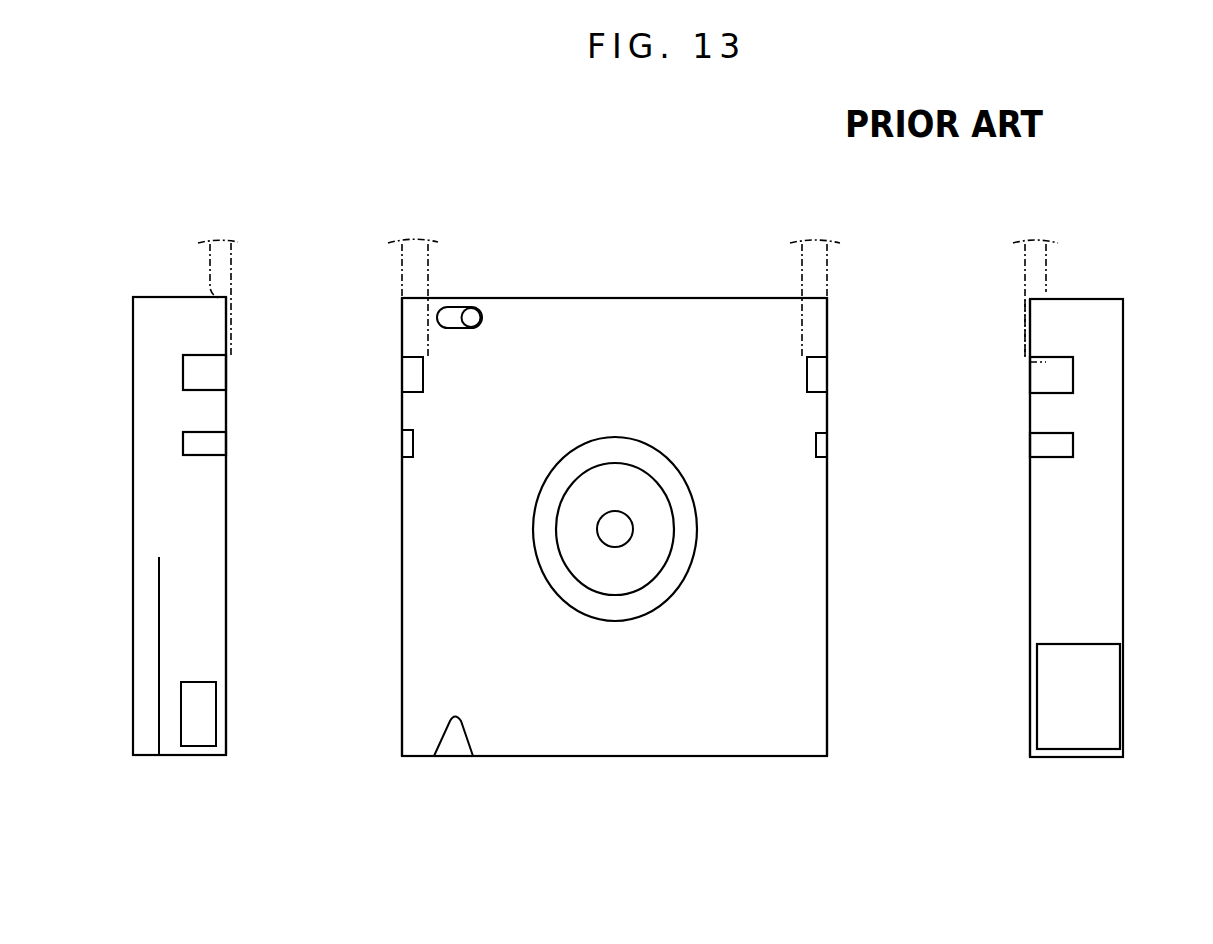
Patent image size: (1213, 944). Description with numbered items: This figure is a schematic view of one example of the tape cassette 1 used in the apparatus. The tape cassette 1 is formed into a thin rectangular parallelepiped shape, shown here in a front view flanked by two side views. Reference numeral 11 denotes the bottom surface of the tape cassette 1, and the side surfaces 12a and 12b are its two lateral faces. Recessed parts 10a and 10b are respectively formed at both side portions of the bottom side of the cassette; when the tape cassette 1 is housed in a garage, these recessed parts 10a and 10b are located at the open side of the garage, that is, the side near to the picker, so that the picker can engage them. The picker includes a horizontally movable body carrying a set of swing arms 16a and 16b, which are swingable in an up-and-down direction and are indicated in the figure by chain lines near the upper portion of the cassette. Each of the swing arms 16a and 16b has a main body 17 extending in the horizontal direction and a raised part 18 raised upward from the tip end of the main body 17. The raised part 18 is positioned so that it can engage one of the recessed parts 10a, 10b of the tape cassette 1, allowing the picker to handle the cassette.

The tape cassette 1 is at (170, 658).
The recessed part 10a is at (210, 380).
The recessed part 10b is at (820, 373).
The bottom surface 11 is at (703, 707).
The side surface 12a is at (200, 575).
The side surface 12b is at (829, 588).
The swing arm 16a is at (218, 250).
The swing arm 16b is at (800, 270).
The main body 17 is at (1025, 325).
The raised part 18 is at (1045, 366).